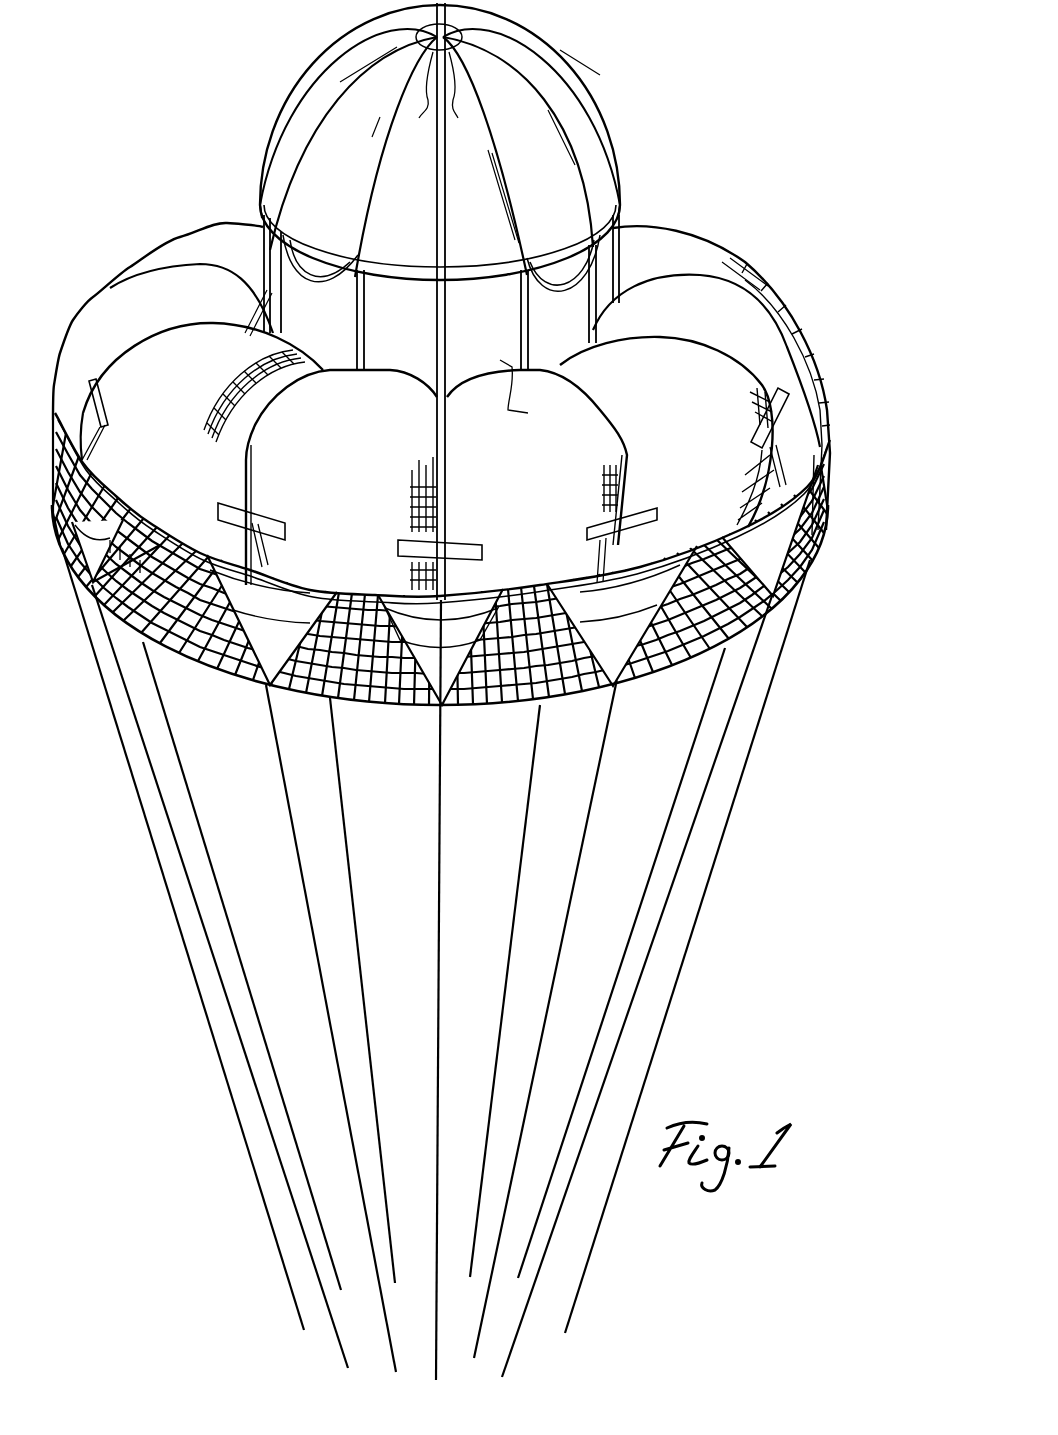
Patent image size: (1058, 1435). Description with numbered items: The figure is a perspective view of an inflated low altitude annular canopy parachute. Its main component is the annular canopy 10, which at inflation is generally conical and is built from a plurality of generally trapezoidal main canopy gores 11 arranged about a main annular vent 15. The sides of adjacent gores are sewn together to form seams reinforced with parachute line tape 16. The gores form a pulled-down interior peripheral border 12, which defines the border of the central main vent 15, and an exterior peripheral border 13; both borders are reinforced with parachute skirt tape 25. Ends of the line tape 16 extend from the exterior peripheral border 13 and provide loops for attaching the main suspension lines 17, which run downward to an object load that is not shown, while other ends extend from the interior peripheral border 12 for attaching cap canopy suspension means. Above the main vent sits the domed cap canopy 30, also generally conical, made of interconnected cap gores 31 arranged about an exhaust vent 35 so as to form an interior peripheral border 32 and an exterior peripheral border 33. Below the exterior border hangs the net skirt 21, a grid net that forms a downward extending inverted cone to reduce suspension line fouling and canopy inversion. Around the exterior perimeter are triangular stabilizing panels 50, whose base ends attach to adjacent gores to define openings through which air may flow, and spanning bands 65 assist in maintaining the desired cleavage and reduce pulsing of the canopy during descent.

The annular canopy 10 is at (810, 322).
The main canopy gores 11 is at (367, 480).
The interior peripheral border 12 is at (283, 296).
The exterior peripheral border 13 is at (150, 528).
The main annular vent 15 is at (529, 395).
The parachute line tape 16 is at (447, 453).
The main suspension lines 17 is at (437, 916).
The net skirt 21 is at (690, 655).
The parachute skirt tape 25 is at (528, 597).
The domed cap canopy 30 is at (602, 80).
The cap gores 31 is at (458, 230).
The interior peripheral border 32 is at (469, 94).
The exterior peripheral border 33 is at (402, 277).
The exhaust vent 35 is at (410, 94).
The stabilizing panels 50 is at (293, 682).
The spanning bands 65 is at (257, 523).